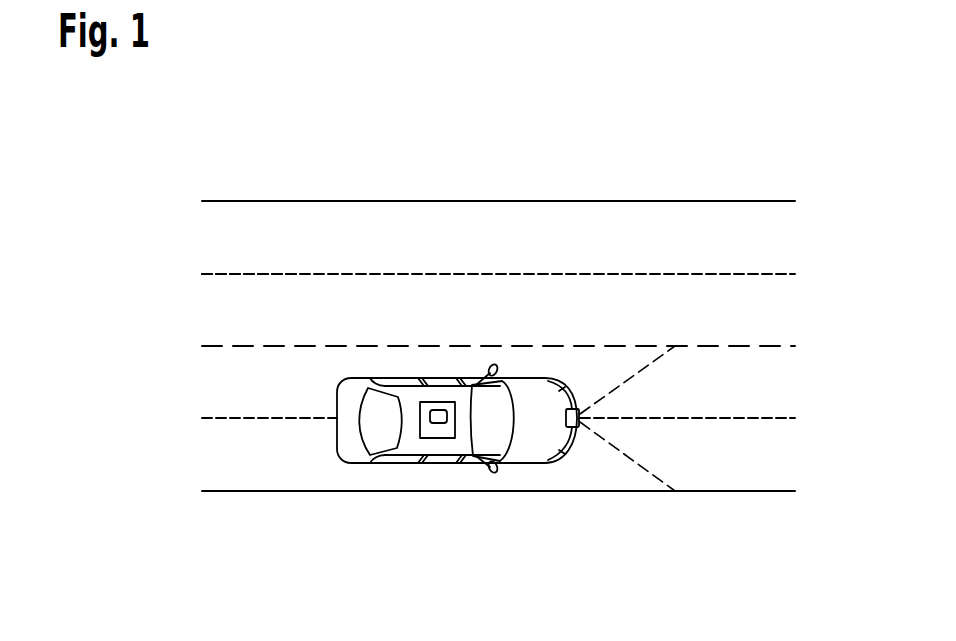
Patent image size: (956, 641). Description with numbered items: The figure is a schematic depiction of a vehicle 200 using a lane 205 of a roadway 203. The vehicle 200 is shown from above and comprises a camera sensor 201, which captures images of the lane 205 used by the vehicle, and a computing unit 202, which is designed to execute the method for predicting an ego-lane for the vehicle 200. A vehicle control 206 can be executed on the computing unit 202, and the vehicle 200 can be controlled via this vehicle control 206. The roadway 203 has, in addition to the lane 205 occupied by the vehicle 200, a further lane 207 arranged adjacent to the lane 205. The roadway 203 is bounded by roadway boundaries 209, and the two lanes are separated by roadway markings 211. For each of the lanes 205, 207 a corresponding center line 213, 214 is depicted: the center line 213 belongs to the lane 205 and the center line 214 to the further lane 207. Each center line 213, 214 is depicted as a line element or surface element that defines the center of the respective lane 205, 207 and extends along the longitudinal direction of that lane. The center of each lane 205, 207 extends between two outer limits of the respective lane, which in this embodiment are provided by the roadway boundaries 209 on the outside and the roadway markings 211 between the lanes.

The vehicle 200 is at (355, 463).
The camera sensor 201 is at (565, 419).
The computing unit 202 is at (433, 438).
The roadway 203 is at (732, 154).
The lane 205 is at (702, 452).
The vehicle control 206 is at (441, 423).
The further lane 207 is at (540, 253).
The roadway boundaries 209 is at (444, 200).
The roadway markings 211 is at (247, 346).
The center line 213 is at (222, 418).
The center line 214 is at (222, 273).